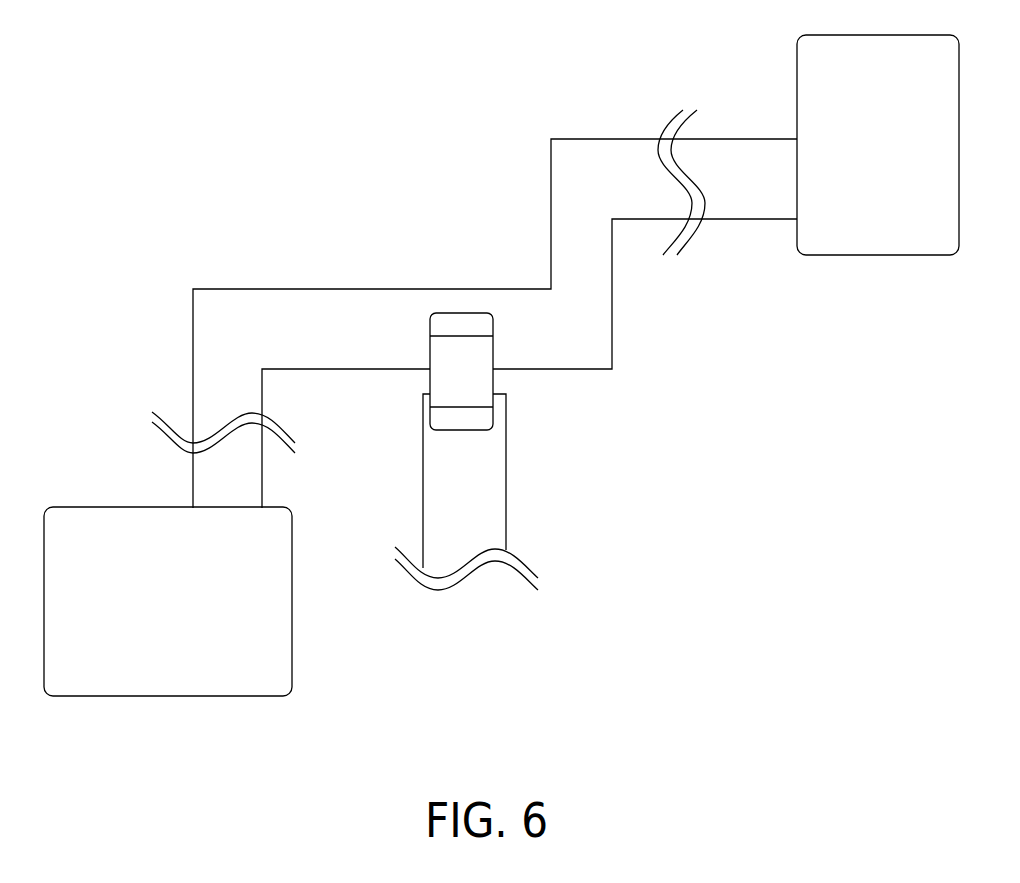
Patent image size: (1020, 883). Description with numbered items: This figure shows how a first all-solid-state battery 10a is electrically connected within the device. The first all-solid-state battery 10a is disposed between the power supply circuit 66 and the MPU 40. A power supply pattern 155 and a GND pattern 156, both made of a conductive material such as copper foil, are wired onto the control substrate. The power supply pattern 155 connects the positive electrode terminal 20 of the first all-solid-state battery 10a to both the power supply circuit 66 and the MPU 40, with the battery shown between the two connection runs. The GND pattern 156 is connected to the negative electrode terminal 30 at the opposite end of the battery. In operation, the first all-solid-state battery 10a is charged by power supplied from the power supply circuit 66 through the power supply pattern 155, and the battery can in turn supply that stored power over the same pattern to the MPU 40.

The power supply circuit 66 is at (817, 83).
The positive electrode terminal 20 is at (458, 320).
The power supply pattern 155 is at (303, 367).
The first all-solid-state battery 10a is at (463, 360).
The negative electrode terminal 30 is at (433, 420).
The GND pattern 156 is at (487, 478).
The MPU 40 is at (287, 593).